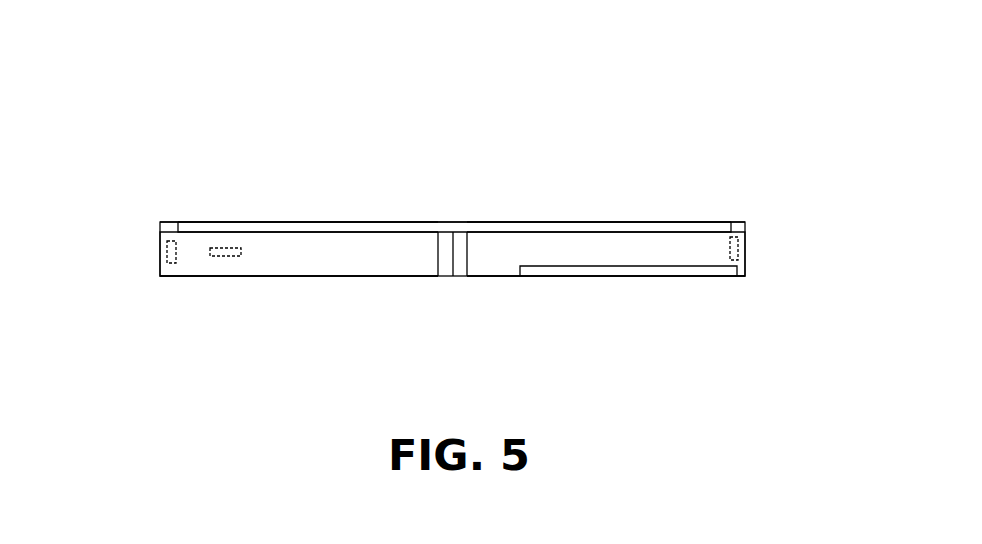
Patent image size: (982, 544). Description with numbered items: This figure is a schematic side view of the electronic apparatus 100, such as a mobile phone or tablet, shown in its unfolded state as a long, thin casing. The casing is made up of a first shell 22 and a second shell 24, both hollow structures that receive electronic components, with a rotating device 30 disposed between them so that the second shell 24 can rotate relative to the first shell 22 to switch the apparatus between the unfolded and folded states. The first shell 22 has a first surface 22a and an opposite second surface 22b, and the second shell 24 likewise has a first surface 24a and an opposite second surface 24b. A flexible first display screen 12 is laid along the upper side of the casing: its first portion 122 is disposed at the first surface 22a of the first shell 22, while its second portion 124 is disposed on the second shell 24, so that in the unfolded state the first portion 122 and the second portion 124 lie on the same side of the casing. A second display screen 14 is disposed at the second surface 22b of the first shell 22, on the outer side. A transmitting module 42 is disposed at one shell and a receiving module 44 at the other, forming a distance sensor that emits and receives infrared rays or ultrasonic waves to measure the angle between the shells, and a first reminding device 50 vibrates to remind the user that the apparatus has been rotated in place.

The electronic apparatus 100 is at (202, 158).
The first display screen 12 is at (454, 172).
The first portion 122 is at (520, 231).
The second portion 124 is at (335, 228).
The second display screen 14 is at (657, 272).
The first shell 22 is at (492, 265).
The first surface 22a is at (708, 222).
The second surface 22b is at (703, 266).
The second shell 24 is at (303, 262).
The first surface 24a is at (300, 231).
The second surface 24b is at (310, 277).
The rotating device 30 is at (440, 260).
The transmitting module 42 is at (168, 250).
The receiving module 44 is at (738, 250).
The first reminding device 50 is at (218, 249).